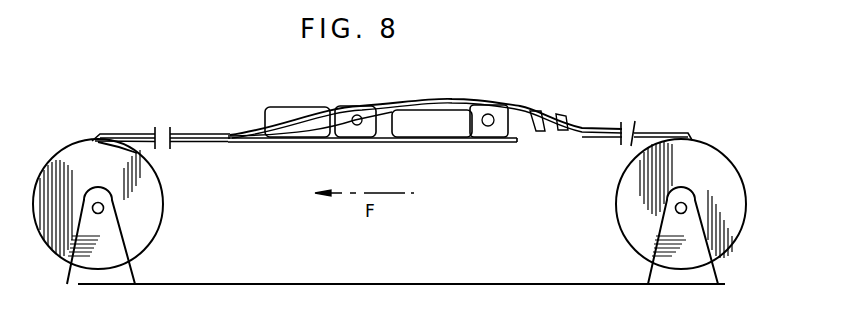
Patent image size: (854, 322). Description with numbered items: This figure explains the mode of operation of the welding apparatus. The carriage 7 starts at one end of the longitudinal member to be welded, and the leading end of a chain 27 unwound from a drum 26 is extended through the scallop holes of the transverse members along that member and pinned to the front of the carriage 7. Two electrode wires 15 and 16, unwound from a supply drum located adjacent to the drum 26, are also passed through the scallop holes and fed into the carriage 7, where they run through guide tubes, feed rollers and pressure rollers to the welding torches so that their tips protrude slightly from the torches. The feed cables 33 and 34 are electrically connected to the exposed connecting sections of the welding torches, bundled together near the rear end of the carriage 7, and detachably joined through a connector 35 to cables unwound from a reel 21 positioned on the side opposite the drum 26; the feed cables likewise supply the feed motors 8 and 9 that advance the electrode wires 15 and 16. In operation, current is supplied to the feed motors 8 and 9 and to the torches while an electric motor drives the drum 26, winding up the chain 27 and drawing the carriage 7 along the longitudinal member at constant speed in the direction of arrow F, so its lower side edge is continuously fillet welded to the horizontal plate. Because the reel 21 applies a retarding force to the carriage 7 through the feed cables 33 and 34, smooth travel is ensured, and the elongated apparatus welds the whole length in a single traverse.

The carriage 7 is at (333, 103).
The feed motor 8 is at (446, 151).
The feed motor 9 is at (357, 138).
The electrode wire 15 is at (118, 133).
The electrode wire 16 is at (116, 118).
The reel 21 is at (618, 215).
The drum 26 is at (164, 216).
The chain 27 is at (198, 143).
The feed cable 33 is at (548, 133).
The feed cable 34 is at (590, 128).
The connector 35 is at (630, 125).